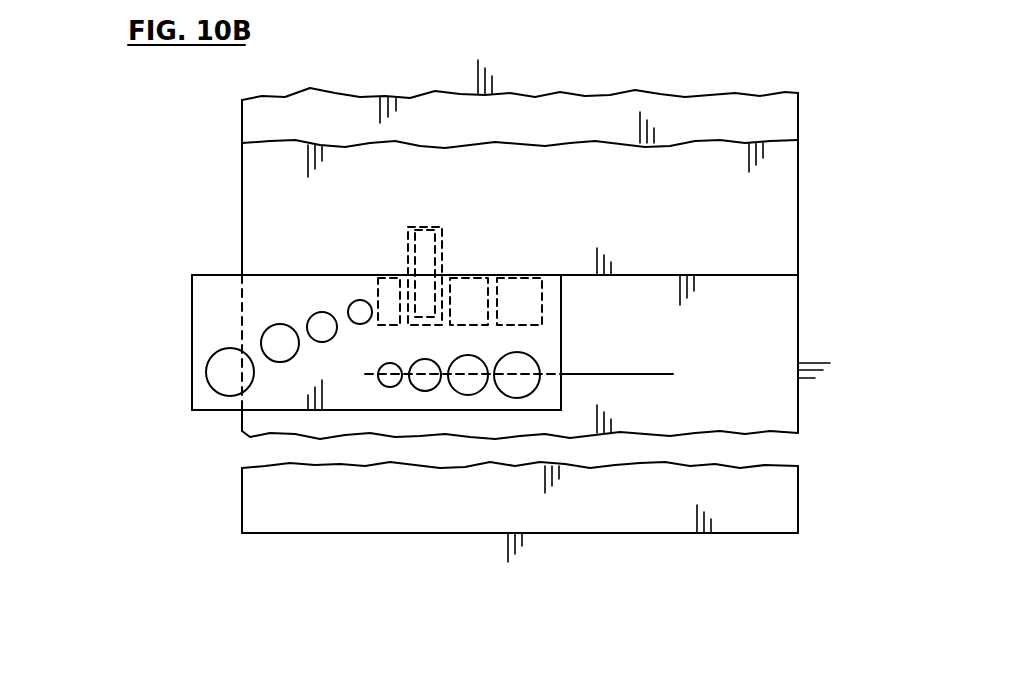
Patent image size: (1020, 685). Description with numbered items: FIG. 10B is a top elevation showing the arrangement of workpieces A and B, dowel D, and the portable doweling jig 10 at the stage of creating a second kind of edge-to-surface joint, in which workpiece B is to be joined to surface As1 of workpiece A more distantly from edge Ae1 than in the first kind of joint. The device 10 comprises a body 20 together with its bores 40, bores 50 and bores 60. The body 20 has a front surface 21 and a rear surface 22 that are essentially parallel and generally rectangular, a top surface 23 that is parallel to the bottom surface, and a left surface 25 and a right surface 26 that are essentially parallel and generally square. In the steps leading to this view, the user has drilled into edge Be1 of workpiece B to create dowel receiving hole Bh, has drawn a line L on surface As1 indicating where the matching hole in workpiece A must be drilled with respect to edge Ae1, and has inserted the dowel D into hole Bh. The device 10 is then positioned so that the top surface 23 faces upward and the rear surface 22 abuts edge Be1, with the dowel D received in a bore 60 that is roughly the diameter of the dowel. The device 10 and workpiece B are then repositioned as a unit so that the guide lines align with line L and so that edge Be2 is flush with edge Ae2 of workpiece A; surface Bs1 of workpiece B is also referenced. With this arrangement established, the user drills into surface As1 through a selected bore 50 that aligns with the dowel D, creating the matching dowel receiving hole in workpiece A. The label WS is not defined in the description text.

The portable doweling jig 10 is at (465, 333).
The body 20 is at (465, 348).
The front surface 21 is at (359, 342).
The rear surface 22 is at (210, 272).
The top surface 23 is at (205, 315).
The left surface 25 is at (190, 363).
The right surface 26 is at (565, 328).
The bores 40 is at (232, 348).
The bores 50 is at (517, 398).
The bores 60 is at (467, 245).
The dowel D is at (428, 250).
The dowel receiving hole Bh is at (432, 226).
The line L is at (673, 374).
The workpiece A is at (556, 132).
The workpiece B is at (672, 212).
The surface As1 is at (705, 103).
The edge Ae1 is at (600, 541).
The edge Ae2 is at (240, 127).
The surface Bs1 is at (762, 208).
The edge Be1 is at (763, 283).
The edge Be2 is at (240, 184).
The wall side / ground WS is at (472, 62).